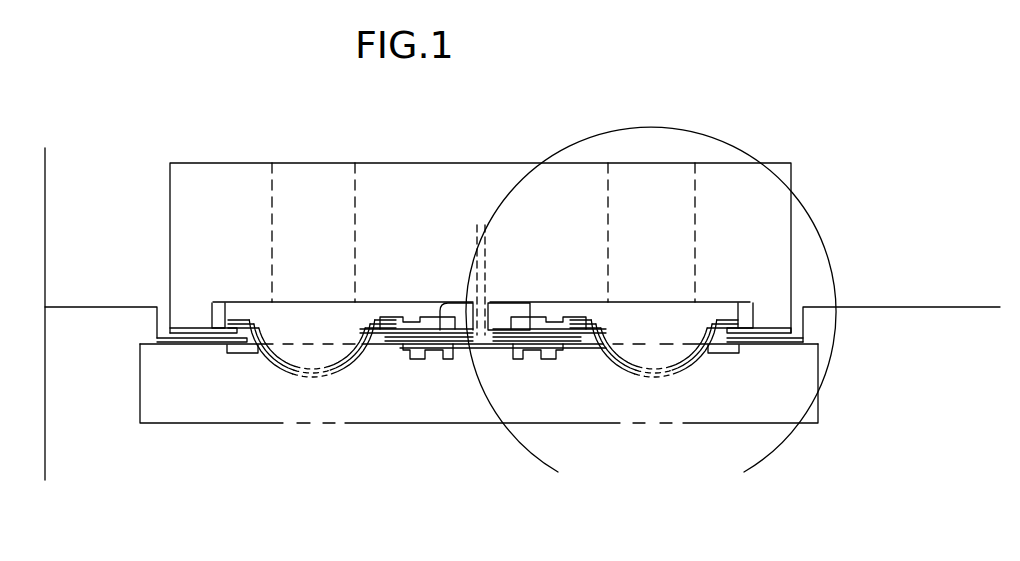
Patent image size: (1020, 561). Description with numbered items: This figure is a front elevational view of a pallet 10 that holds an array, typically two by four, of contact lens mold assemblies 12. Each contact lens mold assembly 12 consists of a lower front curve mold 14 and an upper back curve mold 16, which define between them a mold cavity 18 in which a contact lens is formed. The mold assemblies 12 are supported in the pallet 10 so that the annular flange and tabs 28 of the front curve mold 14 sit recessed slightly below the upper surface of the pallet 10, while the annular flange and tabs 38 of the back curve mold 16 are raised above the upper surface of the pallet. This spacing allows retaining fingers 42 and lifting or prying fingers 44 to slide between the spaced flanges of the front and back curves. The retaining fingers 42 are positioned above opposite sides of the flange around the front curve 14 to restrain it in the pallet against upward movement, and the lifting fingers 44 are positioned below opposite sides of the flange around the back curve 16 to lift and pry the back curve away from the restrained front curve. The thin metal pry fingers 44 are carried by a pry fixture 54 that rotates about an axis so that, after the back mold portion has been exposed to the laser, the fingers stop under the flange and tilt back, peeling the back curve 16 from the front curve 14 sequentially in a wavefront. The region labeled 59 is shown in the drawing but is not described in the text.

The pallet 10 is at (197, 423).
The contact lens mold assembly 12 is at (246, 359).
The front curve mold 14 is at (360, 363).
The back curve mold 16 is at (370, 328).
The mold cavity 18 is at (300, 370).
The tabs 28 is at (523, 350).
The tabs 38 is at (440, 302).
The retaining fingers 42 is at (213, 348).
The lifting fingers 44 is at (220, 305).
The pry fixture 54 is at (396, 235).
The housing side compartment 59 is at (296, 235).